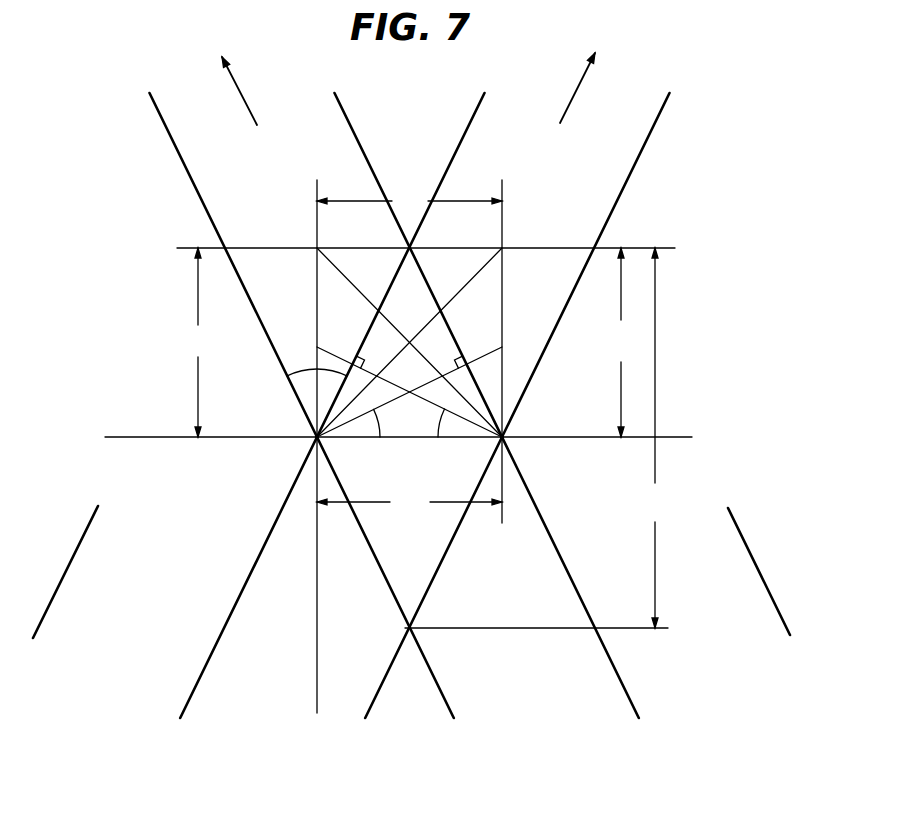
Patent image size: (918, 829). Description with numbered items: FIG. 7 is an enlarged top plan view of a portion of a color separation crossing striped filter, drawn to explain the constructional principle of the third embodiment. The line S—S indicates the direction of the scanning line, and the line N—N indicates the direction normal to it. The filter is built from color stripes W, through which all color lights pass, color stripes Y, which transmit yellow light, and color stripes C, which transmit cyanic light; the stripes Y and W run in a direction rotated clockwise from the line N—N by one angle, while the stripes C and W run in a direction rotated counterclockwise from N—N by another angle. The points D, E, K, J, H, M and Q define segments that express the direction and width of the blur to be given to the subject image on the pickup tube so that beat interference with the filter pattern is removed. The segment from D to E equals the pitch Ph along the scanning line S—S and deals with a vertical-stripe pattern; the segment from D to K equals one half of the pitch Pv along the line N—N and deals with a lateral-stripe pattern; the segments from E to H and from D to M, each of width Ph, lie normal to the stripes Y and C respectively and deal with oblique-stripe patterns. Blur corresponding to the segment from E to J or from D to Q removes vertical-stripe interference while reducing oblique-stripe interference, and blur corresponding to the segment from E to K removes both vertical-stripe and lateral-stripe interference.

The color stripes C is at (237, 87).
The color stripes Y is at (572, 97).
The color stripes W is at (411, 605).
The line N— N is at (317, 451).
The line S— S is at (395, 439).
The point D is at (316, 440).
The point E is at (503, 440).
The point K is at (317, 248).
The point J is at (317, 345).
The point H is at (333, 355).
The point M is at (482, 353).
The point Q is at (500, 347).
The vertical-stripe pattern pitch Ph is at (409, 353).
The filter pitch Pv is at (653, 438).